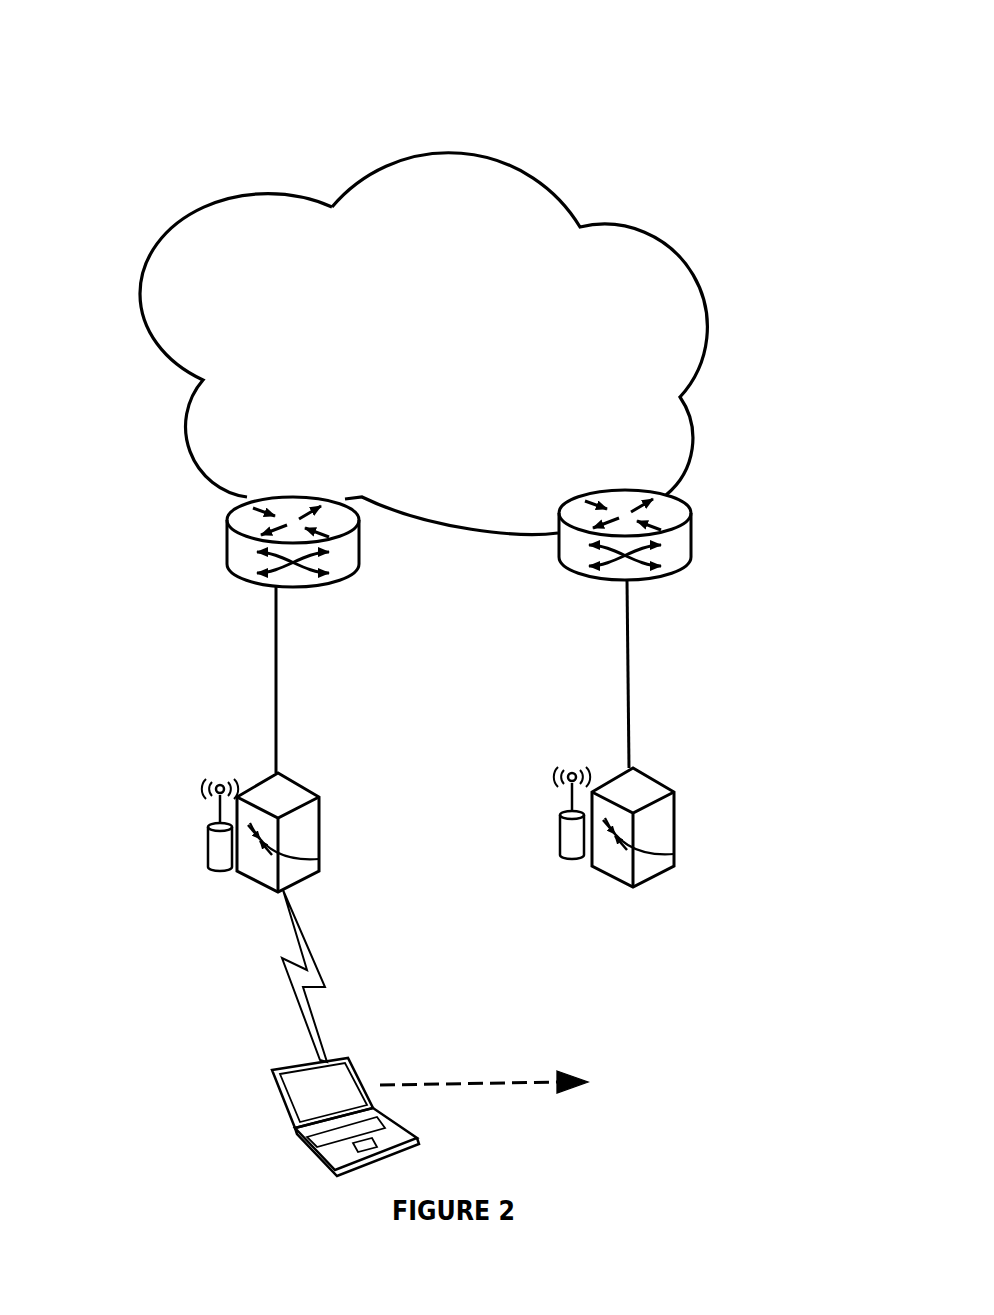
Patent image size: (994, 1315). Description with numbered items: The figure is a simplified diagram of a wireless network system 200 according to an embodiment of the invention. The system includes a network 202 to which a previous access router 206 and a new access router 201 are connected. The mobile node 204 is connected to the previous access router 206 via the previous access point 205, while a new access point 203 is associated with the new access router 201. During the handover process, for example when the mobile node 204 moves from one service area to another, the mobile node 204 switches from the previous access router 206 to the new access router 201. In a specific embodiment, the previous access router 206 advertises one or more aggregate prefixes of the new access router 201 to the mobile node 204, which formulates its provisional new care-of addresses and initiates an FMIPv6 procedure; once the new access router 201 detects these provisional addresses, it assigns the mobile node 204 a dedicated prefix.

The network system 200 is at (624, 82).
The new access router 201 is at (668, 505).
The network 202 is at (638, 242).
The new access point 203 is at (752, 865).
The mobile node 204 is at (383, 1047).
The previous access point 205 is at (327, 807).
The previous access router 206 is at (276, 515).